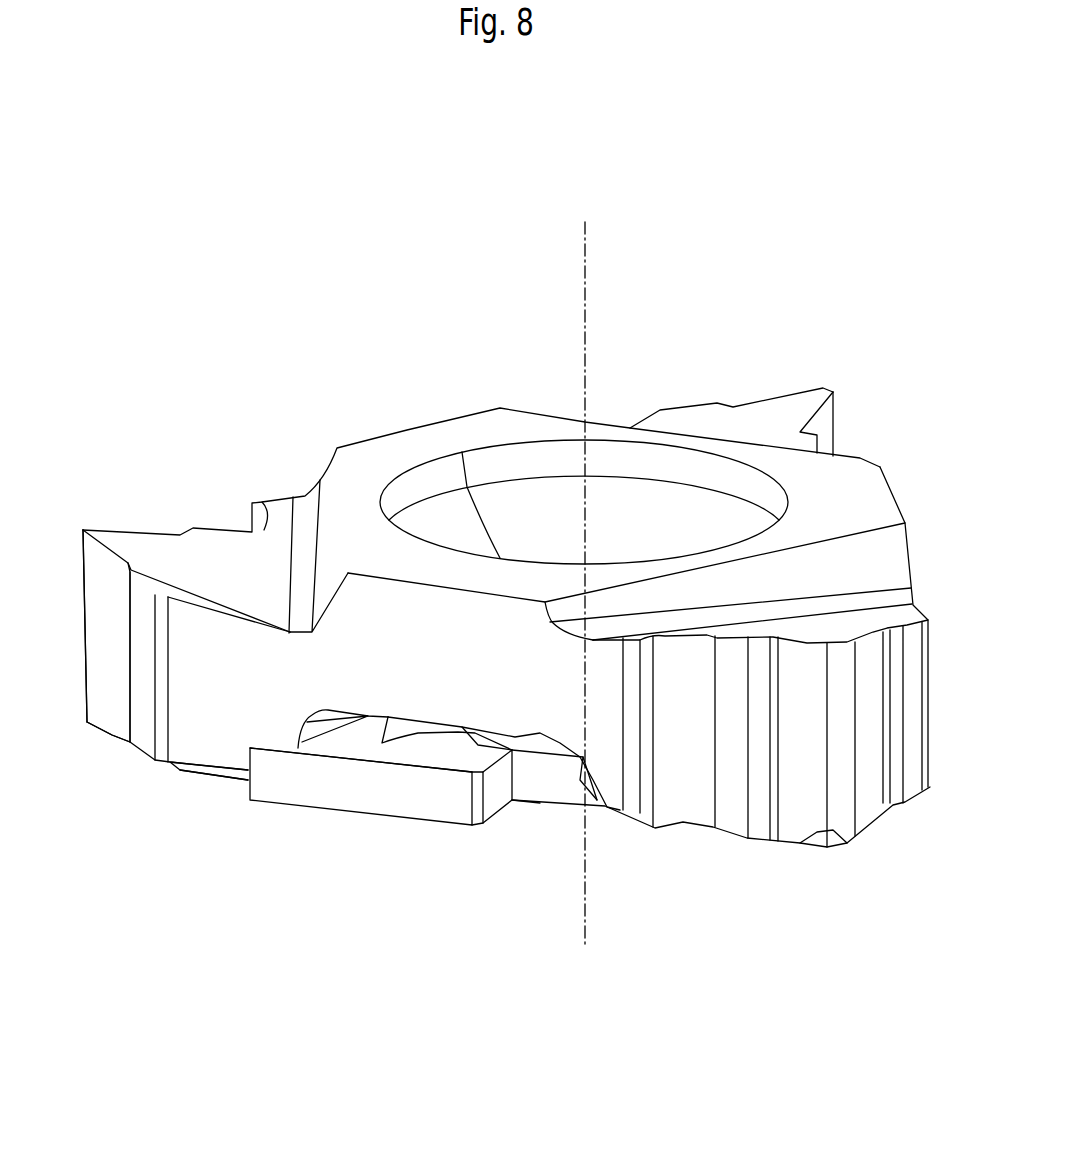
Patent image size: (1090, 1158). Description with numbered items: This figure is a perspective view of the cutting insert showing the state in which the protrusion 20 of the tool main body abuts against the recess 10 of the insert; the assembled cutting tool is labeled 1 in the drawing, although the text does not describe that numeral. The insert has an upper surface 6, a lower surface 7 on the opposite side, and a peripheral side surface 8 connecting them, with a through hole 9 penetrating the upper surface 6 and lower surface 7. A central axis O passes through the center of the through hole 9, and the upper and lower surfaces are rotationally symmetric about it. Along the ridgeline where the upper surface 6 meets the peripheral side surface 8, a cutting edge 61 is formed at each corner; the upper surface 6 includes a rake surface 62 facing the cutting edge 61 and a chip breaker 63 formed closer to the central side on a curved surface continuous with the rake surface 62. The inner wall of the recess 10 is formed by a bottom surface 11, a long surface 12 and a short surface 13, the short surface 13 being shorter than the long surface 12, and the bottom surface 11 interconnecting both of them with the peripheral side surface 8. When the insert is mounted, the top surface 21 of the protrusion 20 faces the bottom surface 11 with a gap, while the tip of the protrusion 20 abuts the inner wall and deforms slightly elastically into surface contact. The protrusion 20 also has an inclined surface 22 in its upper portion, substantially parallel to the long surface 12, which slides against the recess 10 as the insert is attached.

The ring member 1 is at (510, 1081).
The upper surface 6 is at (460, 430).
The lower surface 7 is at (230, 788).
The peripheral side surface 8 is at (215, 718).
The through hole 9 is at (663, 525).
The recess 10 is at (710, 958).
The bottom surface 11 is at (452, 752).
The long surface 12 is at (560, 778).
The short surface 13 is at (343, 737).
The protrusion 20 is at (348, 962).
The top surface 21 is at (418, 757).
The inclined surface 22 is at (533, 777).
The cutting edge 61 is at (897, 348).
The rake surface 62 is at (103, 523).
The chip breaker 63 is at (955, 505).
The central axis O is at (587, 561).